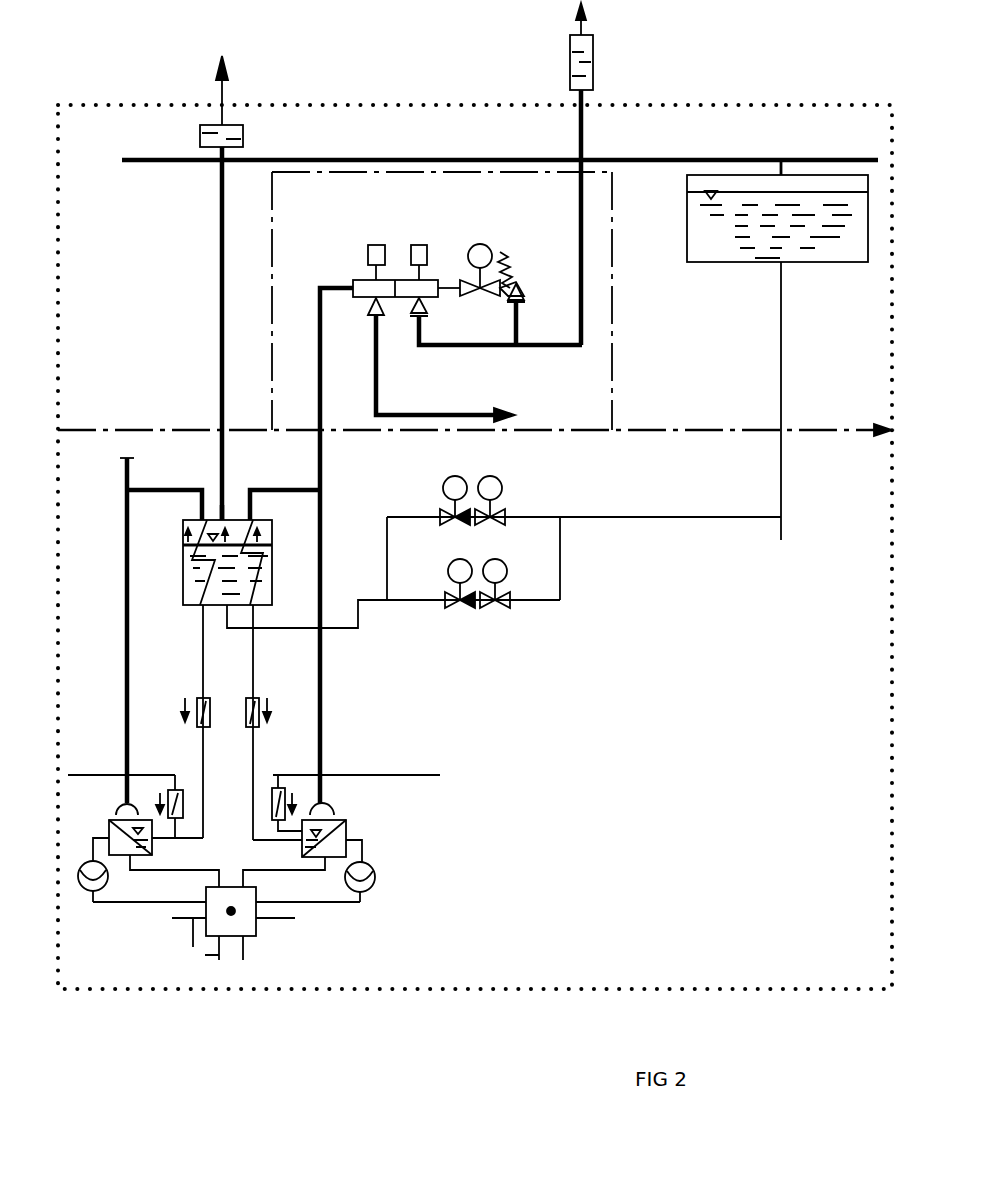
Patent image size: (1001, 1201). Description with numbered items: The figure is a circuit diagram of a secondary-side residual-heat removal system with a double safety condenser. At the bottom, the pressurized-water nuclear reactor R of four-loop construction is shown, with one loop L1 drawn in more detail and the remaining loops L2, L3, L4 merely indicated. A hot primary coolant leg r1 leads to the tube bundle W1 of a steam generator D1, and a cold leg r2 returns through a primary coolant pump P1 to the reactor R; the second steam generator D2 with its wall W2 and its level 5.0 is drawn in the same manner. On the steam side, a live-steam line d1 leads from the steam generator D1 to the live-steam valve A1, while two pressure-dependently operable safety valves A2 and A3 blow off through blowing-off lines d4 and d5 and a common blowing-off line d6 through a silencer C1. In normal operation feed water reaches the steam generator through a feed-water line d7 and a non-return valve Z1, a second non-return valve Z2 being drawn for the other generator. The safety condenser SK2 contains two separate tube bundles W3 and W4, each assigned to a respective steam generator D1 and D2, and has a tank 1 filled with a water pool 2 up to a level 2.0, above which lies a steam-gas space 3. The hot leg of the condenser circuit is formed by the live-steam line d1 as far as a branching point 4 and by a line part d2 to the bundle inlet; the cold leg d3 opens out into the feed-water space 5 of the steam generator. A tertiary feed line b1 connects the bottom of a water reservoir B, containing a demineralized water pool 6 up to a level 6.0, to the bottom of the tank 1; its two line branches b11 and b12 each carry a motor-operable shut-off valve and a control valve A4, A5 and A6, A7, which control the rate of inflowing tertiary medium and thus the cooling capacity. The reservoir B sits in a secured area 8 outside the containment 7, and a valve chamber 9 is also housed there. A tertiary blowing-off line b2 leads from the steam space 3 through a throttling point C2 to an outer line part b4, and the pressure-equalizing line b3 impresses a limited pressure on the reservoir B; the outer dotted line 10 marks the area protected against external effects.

The outer dotted line 10 is at (378, 103).
The valve chamber 9 is at (576, 405).
The secured area 8 is at (733, 405).
The containment 7 is at (778, 633).
The pressure-equalizing line b3 is at (650, 162).
The outer part of the blowing-off line b4 is at (222, 118).
The throttling point C2 is at (243, 137).
The tertiary blowing-off line b2 is at (208, 333).
The silencer C1 is at (593, 52).
The common blowing-off line d6 is at (583, 270).
The demineralized water pool 6 is at (838, 260).
The level 6.0 is at (690, 184).
The water reservoir B is at (751, 305).
The live-steam valve A1 is at (380, 246).
The safety valve A2 is at (419, 244).
The safety valve A3 is at (502, 248).
The live-steam line d1 is at (320, 342).
The blowing-off line d4 is at (420, 325).
The blowing-off line d5 is at (517, 324).
The line part d2 is at (172, 478).
The safety condenser SK2 is at (178, 643).
The level 2.0 is at (212, 530).
The steam-gas space 3 is at (240, 516).
The branching point 4 is at (322, 490).
The tube bundle W4 is at (186, 545).
The tube bundle W3 is at (250, 560).
The tank 1 is at (192, 583).
The water pool 2 is at (264, 580).
The tertiary feed line b1 is at (340, 615).
The line branch b11 is at (534, 516).
The line branch b12 is at (545, 602).
The motor-operable shut-off valve A4 is at (444, 525).
The control valve A5 is at (505, 522).
The motor-operable shut-off valve A6 is at (450, 608).
The control valve A7 is at (500, 608).
The line part d3 is at (200, 696).
The metering device Z2 is at (232, 690).
The feed-water line d7 is at (88, 775).
The non-return valve Z1 is at (183, 788).
The steam generator D2 is at (126, 815).
The partition wall W2 is at (112, 828).
The steam generator D1 is at (343, 826).
The feed-water space 5 is at (332, 808).
The tube bundle W1 is at (350, 835).
The liquid level 5.0 is at (355, 855).
The primary coolant pump P1 is at (86, 892).
The hot primary coolant leg r1 is at (208, 870).
The cold leg r2 is at (128, 903).
The loop L1 is at (303, 902).
The loop L2 is at (167, 902).
The loop L3 is at (195, 950).
The loop L4 is at (246, 950).
The nuclear reactor R is at (241, 923).